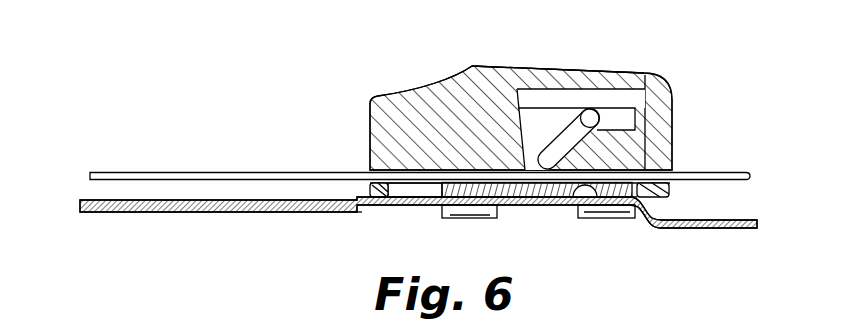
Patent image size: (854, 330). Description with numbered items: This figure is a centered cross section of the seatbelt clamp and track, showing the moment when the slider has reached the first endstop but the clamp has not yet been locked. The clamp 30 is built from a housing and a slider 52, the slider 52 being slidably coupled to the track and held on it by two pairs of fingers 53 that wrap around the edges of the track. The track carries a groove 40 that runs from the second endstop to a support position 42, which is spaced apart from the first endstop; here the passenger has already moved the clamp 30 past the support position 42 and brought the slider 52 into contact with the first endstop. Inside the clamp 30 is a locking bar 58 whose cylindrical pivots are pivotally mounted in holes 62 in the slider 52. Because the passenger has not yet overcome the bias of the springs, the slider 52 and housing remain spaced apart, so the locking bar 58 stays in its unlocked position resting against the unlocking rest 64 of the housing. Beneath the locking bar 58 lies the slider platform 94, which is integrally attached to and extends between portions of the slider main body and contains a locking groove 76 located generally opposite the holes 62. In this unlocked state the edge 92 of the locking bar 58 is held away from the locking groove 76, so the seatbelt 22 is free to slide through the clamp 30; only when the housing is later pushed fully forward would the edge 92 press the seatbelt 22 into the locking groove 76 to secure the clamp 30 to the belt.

The seatbelt 22 is at (183, 172).
The clamp 30 is at (672, 102).
The groove 40 is at (80, 198).
The support position 42 is at (360, 213).
The slider 52 is at (540, 123).
The fingers 53 is at (443, 216).
The locking bar 58 is at (558, 118).
The holes 62 is at (596, 72).
The unlocking rest 64 is at (596, 128).
The locking groove 76 is at (592, 208).
The edge 92 is at (545, 200).
The slider platform 94 is at (560, 208).